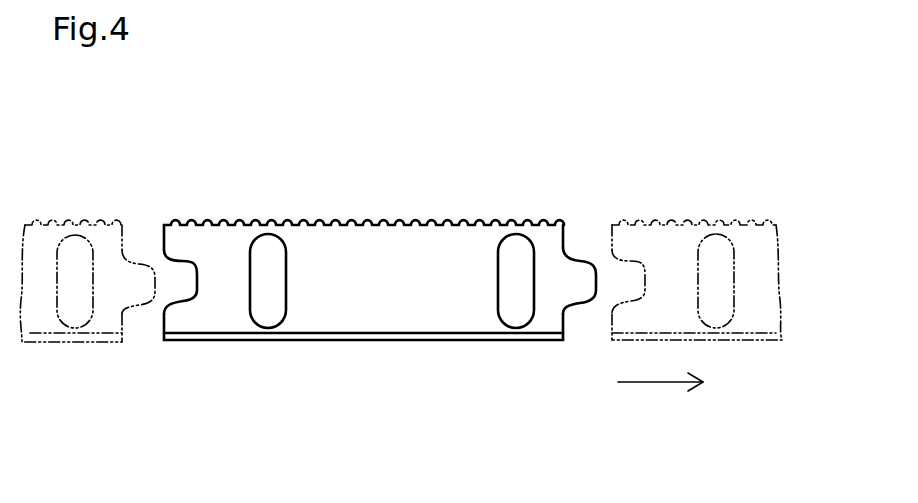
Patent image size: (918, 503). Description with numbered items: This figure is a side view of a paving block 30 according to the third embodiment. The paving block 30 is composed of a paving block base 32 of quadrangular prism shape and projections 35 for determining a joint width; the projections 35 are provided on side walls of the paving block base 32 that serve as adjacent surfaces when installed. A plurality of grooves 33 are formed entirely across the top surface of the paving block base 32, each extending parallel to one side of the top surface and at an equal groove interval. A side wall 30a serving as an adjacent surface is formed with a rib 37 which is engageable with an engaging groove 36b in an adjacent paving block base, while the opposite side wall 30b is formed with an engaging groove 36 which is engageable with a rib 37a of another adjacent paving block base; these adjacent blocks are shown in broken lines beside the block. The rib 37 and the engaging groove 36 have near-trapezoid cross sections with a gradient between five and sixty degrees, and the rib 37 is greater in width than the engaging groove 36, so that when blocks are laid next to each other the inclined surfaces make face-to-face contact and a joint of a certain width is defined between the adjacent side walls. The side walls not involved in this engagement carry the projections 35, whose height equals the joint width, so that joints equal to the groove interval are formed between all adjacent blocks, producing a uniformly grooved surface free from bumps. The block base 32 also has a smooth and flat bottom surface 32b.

The paving block 30 is at (339, 267).
The side wall 30a is at (568, 237).
The opposite side wall 30b is at (163, 232).
The paving block base 32 is at (401, 322).
The bottom surface 32b is at (435, 342).
The grooves 33 is at (285, 222).
The projections 35 is at (270, 317).
The engaging groove 36 is at (183, 286).
The engaging groove 36b is at (597, 257).
The rib 37 is at (580, 285).
The rib 37a is at (142, 290).